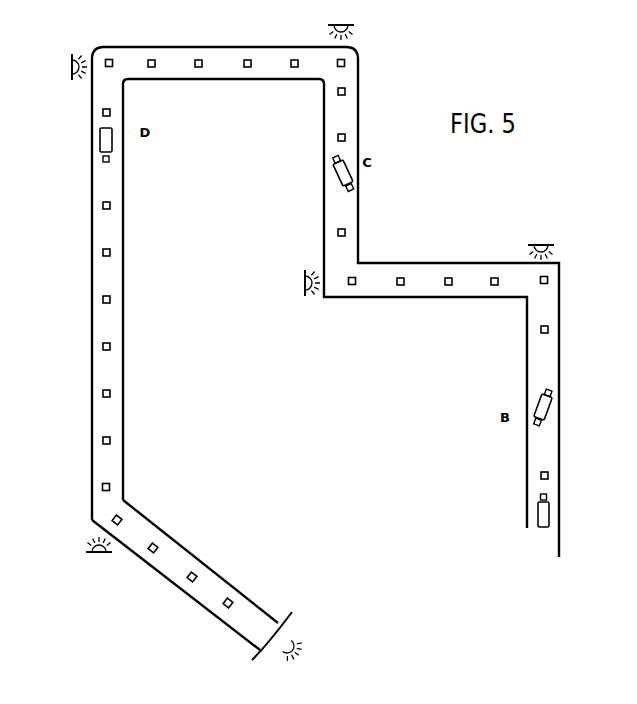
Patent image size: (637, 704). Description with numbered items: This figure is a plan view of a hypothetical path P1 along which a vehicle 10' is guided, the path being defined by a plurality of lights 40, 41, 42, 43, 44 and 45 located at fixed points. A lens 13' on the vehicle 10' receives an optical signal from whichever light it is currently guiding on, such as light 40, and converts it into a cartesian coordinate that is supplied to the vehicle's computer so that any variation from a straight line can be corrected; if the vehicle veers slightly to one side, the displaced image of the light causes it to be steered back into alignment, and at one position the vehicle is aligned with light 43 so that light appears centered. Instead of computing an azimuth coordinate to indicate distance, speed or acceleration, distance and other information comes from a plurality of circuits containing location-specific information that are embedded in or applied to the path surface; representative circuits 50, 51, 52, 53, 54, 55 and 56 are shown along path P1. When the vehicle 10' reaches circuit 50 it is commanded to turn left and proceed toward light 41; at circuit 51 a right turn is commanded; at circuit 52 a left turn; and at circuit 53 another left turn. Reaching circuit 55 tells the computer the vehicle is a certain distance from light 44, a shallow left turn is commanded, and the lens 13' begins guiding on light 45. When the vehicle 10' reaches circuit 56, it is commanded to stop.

The vehicle 10' is at (565, 509).
The lens 13' is at (514, 498).
The light 40 is at (541, 244).
The light 41 is at (302, 283).
The light 42 is at (340, 24).
The light 43 is at (72, 78).
The light 44 is at (86, 552).
The light 45 is at (300, 646).
The circuit 50 is at (548, 280).
The circuit 51 is at (352, 285).
The circuit 52 is at (345, 63).
The circuit 53 is at (109, 59).
The circuit 54 is at (100, 160).
The circuit 55 is at (110, 487).
The circuit 56 is at (231, 600).
The path P1 is at (450, 298).